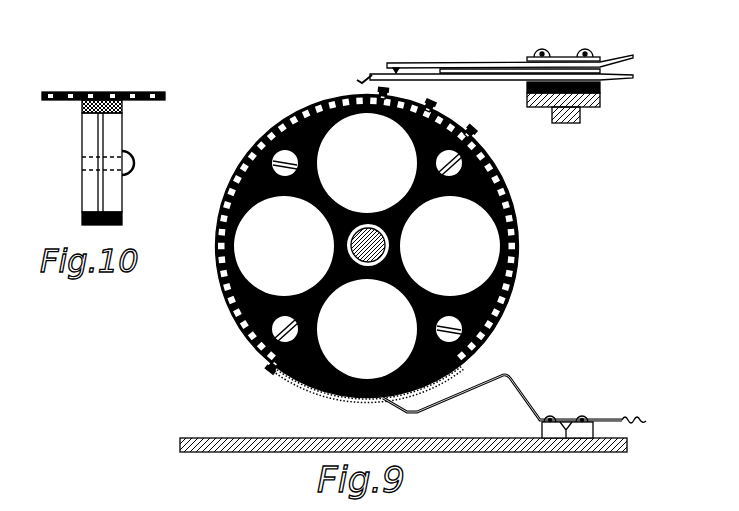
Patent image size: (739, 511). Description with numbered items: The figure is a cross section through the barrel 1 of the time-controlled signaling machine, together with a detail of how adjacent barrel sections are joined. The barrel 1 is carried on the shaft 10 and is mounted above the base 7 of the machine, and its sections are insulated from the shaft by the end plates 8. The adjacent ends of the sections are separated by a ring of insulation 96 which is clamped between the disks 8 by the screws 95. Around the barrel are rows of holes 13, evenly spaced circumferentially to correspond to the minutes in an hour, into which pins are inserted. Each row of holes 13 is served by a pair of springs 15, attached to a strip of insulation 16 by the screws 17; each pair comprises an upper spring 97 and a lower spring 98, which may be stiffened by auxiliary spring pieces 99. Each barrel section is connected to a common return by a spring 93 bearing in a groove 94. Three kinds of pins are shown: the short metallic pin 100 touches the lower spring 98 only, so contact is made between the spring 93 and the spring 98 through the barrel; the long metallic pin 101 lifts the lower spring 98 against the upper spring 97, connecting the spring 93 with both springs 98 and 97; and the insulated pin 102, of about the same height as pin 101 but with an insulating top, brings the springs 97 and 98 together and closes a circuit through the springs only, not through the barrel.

In FIG. 9, the barrel 1 is at (518, 231).
In FIG. 10, the barrel 1 is at (64, 92).
In FIG. 9, the base 7 is at (254, 438).
In FIG. 9, the end plate 8 is at (455, 194).
In FIG. 10, the end plate 8 is at (82, 123).
In FIG. 9, the shaft 10 is at (363, 228).
In FIG. 9, the holes 13 is at (512, 315).
In FIG. 10, the holes 13 is at (150, 92).
In FIG. 9, the springs 15 is at (490, 71).
In FIG. 9, the strip of insulation 16 is at (602, 92).
In FIG. 9, the screws 17 is at (590, 51).
In FIG. 9, the spring 93 is at (505, 381).
In FIG. 9, the groove 94 is at (335, 393).
In FIG. 9, the screws 95 is at (413, 148).
In FIG. 10, the screws 95 is at (134, 160).
In FIG. 10, the ring of insulation 96 is at (101, 92).
In FIG. 9, the upper spring 97 is at (446, 62).
In FIG. 9, the lower spring 98 is at (471, 60).
In FIG. 9, the auxiliary spring pieces 99 is at (500, 62).
In FIG. 9, the short metallic pin 100 is at (356, 84).
In FIG. 9, the long metallic pin 101 is at (438, 102).
In FIG. 9, the insulated pin 102 is at (480, 129).